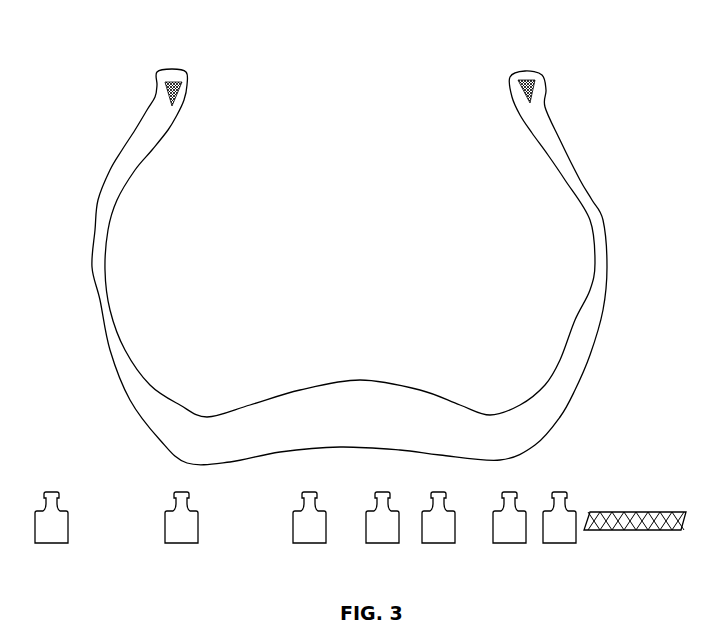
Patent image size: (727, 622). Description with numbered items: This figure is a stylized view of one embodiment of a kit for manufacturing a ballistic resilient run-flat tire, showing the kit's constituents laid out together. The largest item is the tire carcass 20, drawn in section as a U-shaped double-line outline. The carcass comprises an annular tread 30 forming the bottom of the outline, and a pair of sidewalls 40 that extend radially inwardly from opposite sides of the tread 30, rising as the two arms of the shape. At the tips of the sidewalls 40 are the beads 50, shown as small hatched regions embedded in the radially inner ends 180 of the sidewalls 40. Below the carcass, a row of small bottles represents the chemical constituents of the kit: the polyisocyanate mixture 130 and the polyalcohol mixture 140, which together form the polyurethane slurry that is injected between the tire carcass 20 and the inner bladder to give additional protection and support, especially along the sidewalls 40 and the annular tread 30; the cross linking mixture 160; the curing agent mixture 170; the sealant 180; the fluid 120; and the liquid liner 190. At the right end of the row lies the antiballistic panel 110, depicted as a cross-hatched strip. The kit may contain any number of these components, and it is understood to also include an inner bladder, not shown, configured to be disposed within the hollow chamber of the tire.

The tire carcass 20 is at (645, 131).
The annular tread 30 is at (355, 448).
The sidewalls 40 is at (97, 222).
The beads 50 is at (165, 91).
The antiballistic panel 110 is at (628, 530).
The fluid 120 is at (509, 542).
The polyisocyanate mixture 130 is at (51, 542).
The polyalcohol mixture 140 is at (181, 542).
The cross linking mixture 160 is at (309, 542).
The curing agent mixture 170 is at (382, 542).
The sealant 180 is at (172, 72).
The liquid liner 190 is at (559, 542).